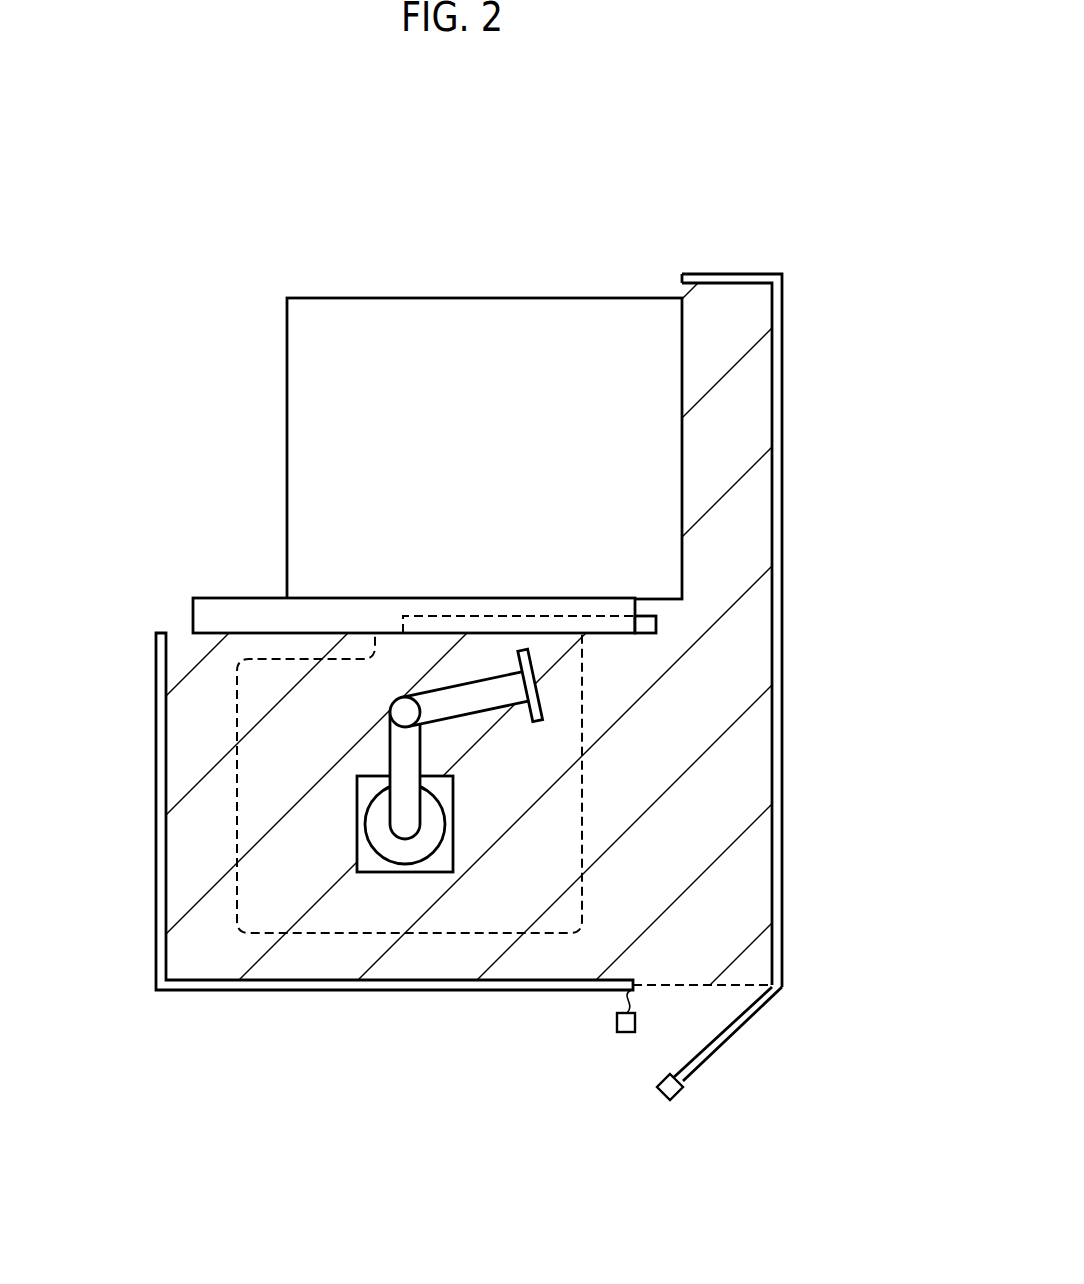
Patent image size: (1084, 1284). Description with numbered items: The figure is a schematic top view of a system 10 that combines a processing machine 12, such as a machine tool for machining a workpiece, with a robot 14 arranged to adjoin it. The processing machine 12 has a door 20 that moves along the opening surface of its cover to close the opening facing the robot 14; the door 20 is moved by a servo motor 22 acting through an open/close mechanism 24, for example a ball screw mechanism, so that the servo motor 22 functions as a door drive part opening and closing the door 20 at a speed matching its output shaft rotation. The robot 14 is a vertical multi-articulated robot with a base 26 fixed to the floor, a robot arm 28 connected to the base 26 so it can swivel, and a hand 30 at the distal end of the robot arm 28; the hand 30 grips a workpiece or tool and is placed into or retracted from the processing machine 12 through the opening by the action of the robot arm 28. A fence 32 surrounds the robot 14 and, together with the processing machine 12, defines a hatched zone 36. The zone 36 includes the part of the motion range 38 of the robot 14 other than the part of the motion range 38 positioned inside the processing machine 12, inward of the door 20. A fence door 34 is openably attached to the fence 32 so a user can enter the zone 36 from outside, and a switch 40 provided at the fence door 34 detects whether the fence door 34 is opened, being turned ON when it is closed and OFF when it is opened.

The system 10 is at (836, 108).
The processing machine 12 is at (476, 266).
The robot 14 is at (471, 877).
The door 20 is at (512, 616).
The servo motor 22 is at (656, 623).
The open/close mechanism 24 is at (222, 614).
The base 26 is at (372, 872).
The robot arm 28 is at (407, 750).
The hand 30 is at (542, 707).
The fence 32 is at (782, 397).
The fence door 34 is at (735, 1033).
The zone 36 is at (709, 838).
The motion range 38 is at (237, 705).
The switch 40 is at (627, 1034).